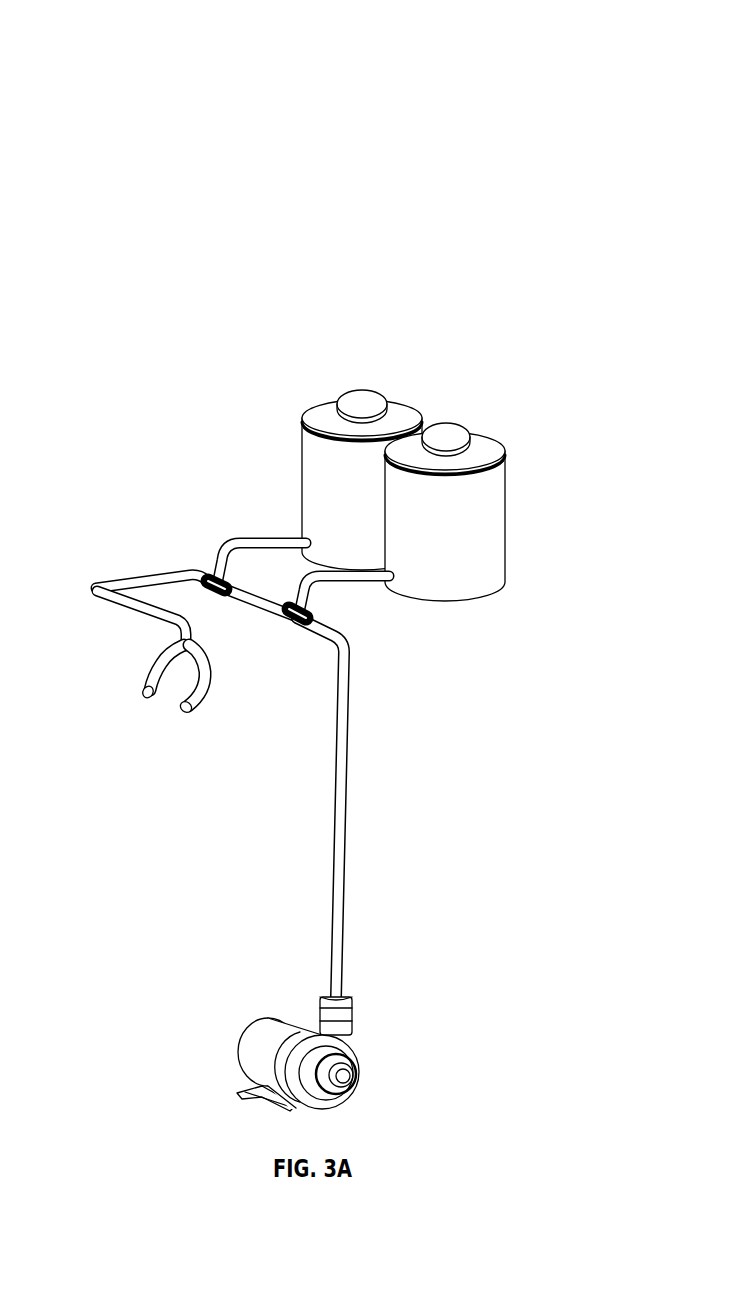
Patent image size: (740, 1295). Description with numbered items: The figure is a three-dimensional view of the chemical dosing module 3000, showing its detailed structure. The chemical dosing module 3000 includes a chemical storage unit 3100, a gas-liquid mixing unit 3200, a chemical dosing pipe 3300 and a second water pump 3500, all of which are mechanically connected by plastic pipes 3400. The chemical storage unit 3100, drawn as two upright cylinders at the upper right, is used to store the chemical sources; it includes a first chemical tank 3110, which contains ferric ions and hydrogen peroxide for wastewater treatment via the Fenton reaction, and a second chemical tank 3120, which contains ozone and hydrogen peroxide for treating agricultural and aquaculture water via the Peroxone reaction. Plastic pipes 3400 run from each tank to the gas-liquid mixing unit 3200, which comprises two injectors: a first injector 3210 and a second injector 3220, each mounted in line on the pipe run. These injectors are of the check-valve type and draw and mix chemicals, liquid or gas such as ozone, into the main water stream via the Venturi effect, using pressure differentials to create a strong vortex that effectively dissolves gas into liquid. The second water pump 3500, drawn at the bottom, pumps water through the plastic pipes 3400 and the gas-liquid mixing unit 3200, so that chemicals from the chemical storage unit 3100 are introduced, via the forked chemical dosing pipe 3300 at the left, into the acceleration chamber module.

The chemical dosing module 3000 is at (283, 559).
The chemical storage unit 3100 is at (550, 288).
The first chemical tank 3110 is at (467, 446).
The second chemical tank 3120 is at (362, 414).
The gas-liquid mixing unit 3200 is at (330, 718).
The first injector 3210 is at (300, 670).
The second injector 3220 is at (235, 634).
The chemical dosing pipe 3300 is at (111, 680).
The plastic pipes 3400 is at (262, 710).
The second water pump 3500 is at (282, 1027).